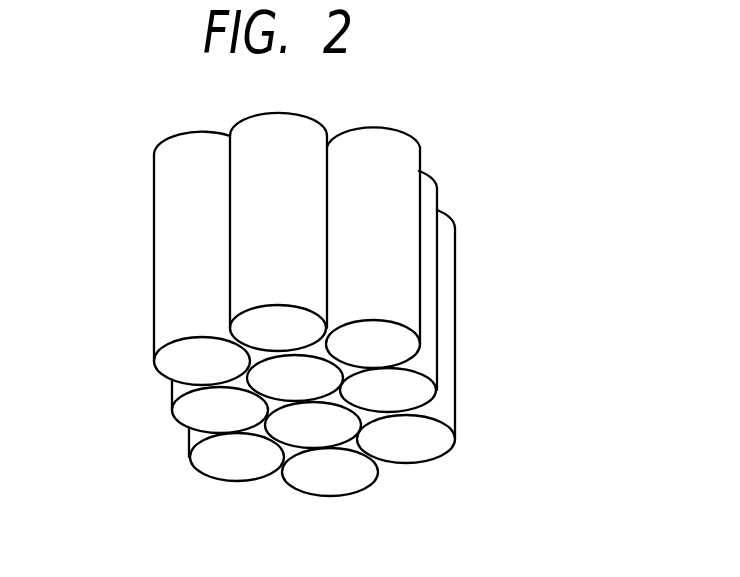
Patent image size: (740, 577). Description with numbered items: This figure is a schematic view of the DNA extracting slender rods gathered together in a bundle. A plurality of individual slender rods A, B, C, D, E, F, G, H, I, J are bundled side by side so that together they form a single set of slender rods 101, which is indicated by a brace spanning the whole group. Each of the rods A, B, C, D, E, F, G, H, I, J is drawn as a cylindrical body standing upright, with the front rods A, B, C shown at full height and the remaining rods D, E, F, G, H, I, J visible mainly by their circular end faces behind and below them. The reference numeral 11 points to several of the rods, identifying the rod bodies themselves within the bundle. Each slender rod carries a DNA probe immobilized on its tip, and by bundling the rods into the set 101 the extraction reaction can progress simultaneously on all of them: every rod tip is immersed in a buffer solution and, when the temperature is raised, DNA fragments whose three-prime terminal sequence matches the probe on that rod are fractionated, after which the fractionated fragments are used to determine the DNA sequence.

The cylindrical battery cells 11 is at (252, 304).
The set of slender rods 101 is at (252, 334).
The slender rod A is at (202, 258).
The slender rod B is at (278, 232).
The slender rod C is at (373, 247).
The slender rod D is at (388, 291).
The slender rod E is at (406, 336).
The slender rod F is at (330, 472).
The slender rod G is at (236, 454).
The slender rod H is at (220, 406).
The slender rod I is at (295, 378).
The slender rod J is at (313, 425).